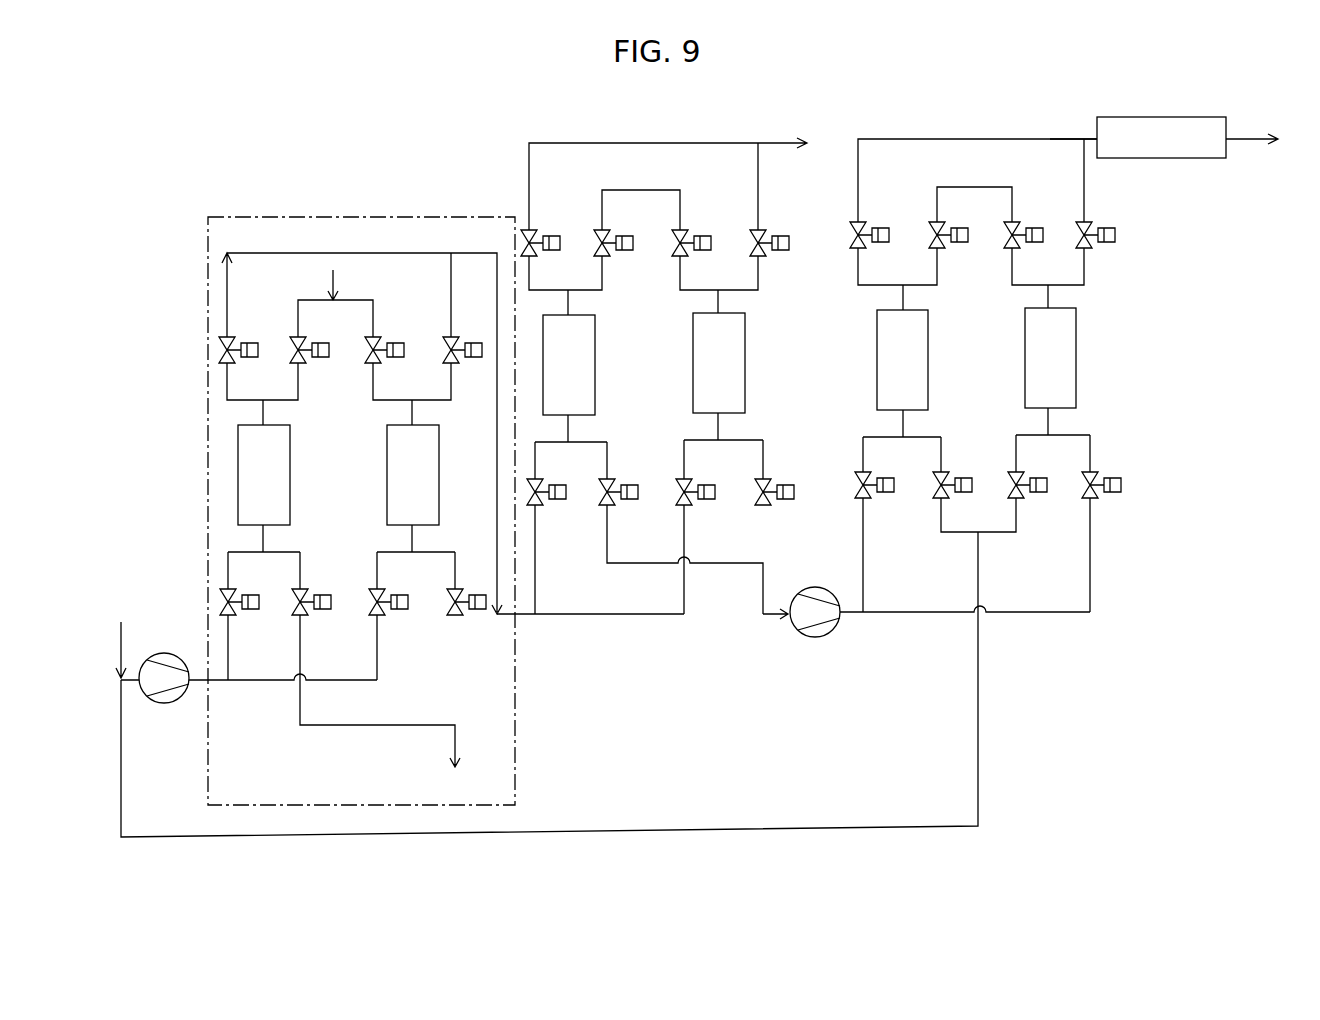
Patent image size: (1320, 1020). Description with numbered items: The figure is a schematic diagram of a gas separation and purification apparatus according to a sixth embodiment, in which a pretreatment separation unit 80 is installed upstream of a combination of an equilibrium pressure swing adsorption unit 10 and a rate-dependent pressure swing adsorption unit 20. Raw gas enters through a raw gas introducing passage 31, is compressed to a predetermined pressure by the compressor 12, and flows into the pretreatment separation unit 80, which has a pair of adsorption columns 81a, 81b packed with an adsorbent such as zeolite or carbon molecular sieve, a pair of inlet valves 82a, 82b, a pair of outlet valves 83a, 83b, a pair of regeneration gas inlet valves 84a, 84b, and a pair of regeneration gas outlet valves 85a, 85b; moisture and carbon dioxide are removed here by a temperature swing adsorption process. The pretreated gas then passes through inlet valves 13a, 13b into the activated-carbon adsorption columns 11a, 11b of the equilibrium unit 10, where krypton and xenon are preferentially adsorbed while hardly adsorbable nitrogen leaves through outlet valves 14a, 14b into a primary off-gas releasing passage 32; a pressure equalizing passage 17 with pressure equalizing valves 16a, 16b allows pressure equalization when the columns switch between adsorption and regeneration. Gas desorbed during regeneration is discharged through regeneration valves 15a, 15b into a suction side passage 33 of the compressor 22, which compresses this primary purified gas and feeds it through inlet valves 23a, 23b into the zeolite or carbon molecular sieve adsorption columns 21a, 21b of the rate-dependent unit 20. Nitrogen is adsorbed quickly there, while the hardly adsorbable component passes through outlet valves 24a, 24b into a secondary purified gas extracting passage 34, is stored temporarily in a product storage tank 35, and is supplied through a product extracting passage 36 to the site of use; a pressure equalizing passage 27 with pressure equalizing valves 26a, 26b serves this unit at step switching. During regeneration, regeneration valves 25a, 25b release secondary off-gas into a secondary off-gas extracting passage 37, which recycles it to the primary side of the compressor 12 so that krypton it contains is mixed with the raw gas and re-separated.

The equilibrium pressure swing adsorption unit 10 is at (508, 184).
The adsorption column 11a is at (596, 340).
The adsorption column 11b is at (693, 388).
The compressor 12 is at (163, 704).
The inlet valve 13a is at (538, 505).
The inlet valve 13b is at (679, 488).
The outlet valve 14a is at (533, 238).
The outlet valve 14b is at (766, 250).
The regeneration valve 15a is at (612, 505).
The regeneration valve 15b is at (757, 500).
The pressure equalizing valve 16a is at (606, 251).
The pressure equalizing valve 16b is at (684, 240).
The pressure equalizing passage 17 is at (633, 190).
The rate-dependent pressure swing adsorption unit 20 is at (1098, 330).
The adsorption column 21a is at (877, 380).
The adsorption column 21b is at (1076, 380).
The compressor 22 is at (822, 638).
The inlet valve 23a is at (858, 500).
The inlet valve 23b is at (1095, 499).
The outlet valve 24a is at (862, 232).
The outlet valve 24b is at (1092, 243).
The regeneration valve 25a is at (937, 500).
The regeneration valve 25b is at (1020, 499).
The pressure equalizing valve 26a is at (944, 247).
The pressure equalizing valve 26b is at (1016, 235).
The pressure equalizing passage 27 is at (972, 187).
The raw gas introducing passage 31 is at (121, 640).
The primary off-gas releasing passage 32 is at (780, 138).
The suction side passage 33 is at (768, 618).
The secondary purified gas extracting passage 34 is at (1095, 137).
The product storage tank 35 is at (1138, 158).
The product extracting passage 36 is at (1240, 137).
The secondary off-gas extracting passage 37 is at (982, 728).
The pretreatment separation unit 80 is at (365, 210).
The adsorption column 81a is at (290, 470).
The adsorption column 81b is at (388, 500).
The inlet valve 82a is at (232, 617).
The inlet valve 82b is at (372, 598).
The outlet valve 83a is at (230, 345).
The outlet valve 83b is at (452, 340).
The regeneration gas inlet valve 84a is at (296, 357).
The regeneration gas inlet valve 84b is at (376, 347).
The regeneration gas outlet valve 85a is at (305, 613).
The regeneration gas outlet valve 85b is at (450, 615).